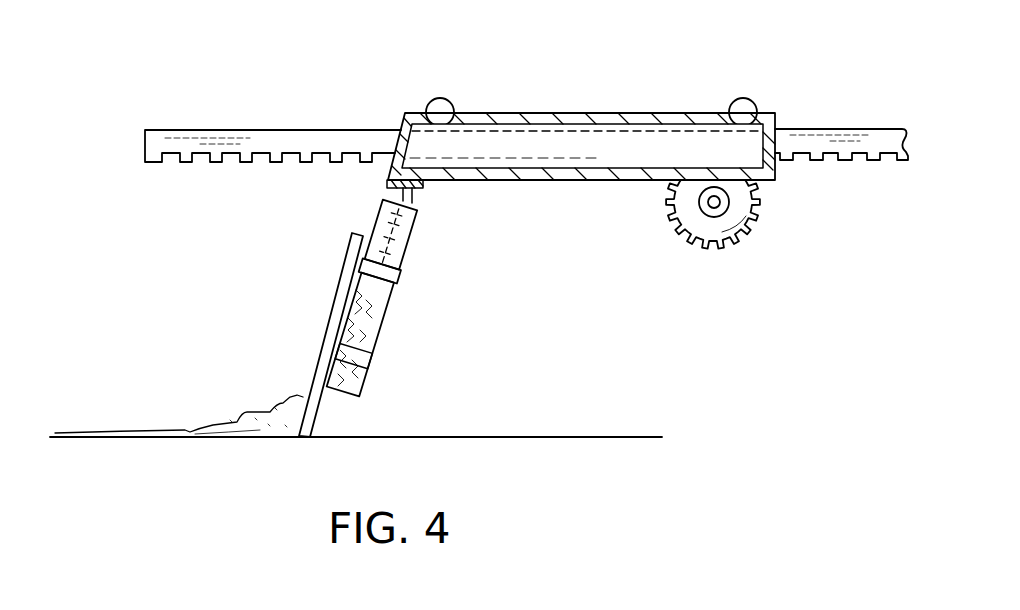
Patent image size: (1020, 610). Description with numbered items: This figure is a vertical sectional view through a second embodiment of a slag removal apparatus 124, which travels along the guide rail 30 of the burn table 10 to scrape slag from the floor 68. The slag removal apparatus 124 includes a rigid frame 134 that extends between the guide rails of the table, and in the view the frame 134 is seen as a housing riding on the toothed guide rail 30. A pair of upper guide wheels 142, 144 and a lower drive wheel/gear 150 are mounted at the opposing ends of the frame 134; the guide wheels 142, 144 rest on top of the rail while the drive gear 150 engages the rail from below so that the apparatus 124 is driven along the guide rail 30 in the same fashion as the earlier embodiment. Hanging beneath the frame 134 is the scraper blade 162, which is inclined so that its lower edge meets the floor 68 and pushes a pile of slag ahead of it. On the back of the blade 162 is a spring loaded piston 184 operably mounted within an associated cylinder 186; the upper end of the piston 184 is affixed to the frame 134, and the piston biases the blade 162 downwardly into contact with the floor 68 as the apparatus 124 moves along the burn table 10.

The burn table 10 is at (218, 105).
The guide rail 30 is at (250, 132).
The floor 68 is at (558, 437).
The slag removal apparatus 124 is at (617, 100).
The rigid frame 134 is at (570, 112).
The upper guide wheel 142 is at (745, 98).
The upper guide wheel 144 is at (438, 100).
The lower drive wheel/gear 150 is at (692, 233).
The scraper blade 162 is at (318, 340).
The spring loaded piston 184 is at (404, 196).
The cylinder 186 is at (406, 252).